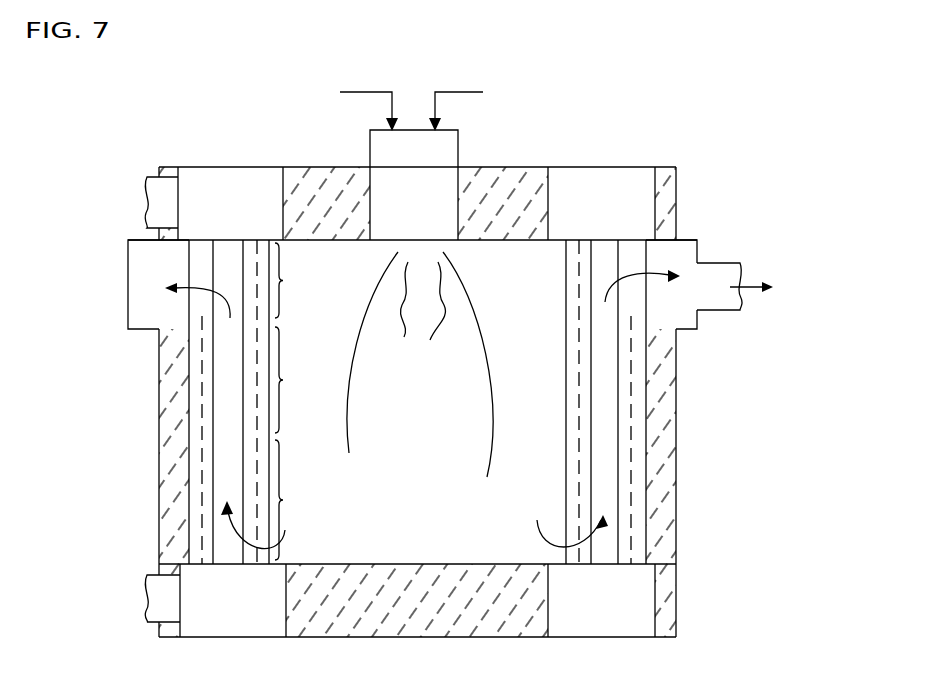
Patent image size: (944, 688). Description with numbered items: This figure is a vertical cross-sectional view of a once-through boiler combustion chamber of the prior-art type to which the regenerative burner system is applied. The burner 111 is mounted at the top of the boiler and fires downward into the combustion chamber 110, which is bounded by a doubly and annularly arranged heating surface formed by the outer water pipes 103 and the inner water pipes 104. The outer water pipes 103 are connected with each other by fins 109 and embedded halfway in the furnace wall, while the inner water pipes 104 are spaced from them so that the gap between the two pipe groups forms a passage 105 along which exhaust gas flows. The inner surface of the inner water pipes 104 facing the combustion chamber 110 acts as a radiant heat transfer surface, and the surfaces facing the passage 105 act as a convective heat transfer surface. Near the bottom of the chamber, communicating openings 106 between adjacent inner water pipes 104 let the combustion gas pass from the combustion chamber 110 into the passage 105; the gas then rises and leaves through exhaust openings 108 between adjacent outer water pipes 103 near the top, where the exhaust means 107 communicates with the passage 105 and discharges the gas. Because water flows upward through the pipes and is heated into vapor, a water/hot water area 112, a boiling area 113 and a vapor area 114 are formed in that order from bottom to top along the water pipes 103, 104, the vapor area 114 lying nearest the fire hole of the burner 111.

The water pipes 103 is at (195, 392).
The water pipes 104 is at (248, 432).
The passage 105 is at (228, 357).
The communicating openings 106 is at (584, 557).
The exhaust means 107 is at (128, 270).
The exhaust openings 108 is at (196, 308).
The fins 109 is at (579, 392).
The combustion chamber 110 is at (437, 516).
The burner 111 is at (430, 162).
The water/hot water area 112 is at (297, 500).
The boiling area 113 is at (297, 380).
The vapor area 114 is at (297, 280).